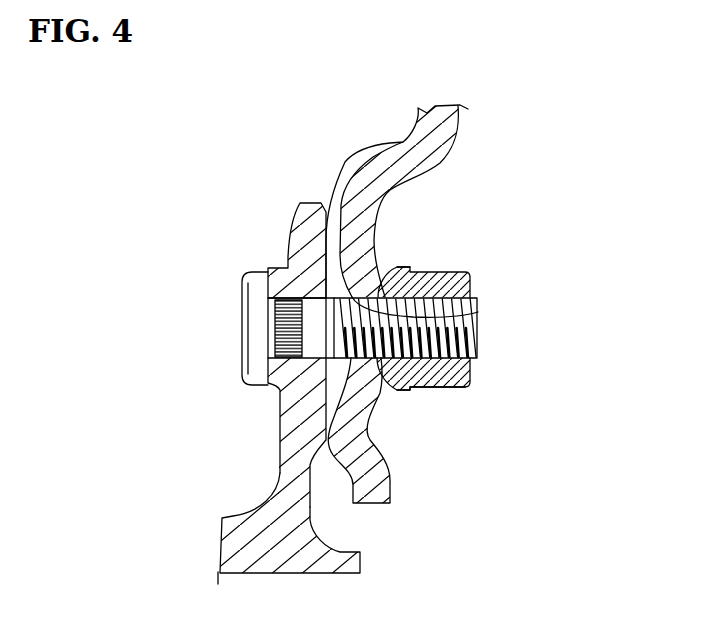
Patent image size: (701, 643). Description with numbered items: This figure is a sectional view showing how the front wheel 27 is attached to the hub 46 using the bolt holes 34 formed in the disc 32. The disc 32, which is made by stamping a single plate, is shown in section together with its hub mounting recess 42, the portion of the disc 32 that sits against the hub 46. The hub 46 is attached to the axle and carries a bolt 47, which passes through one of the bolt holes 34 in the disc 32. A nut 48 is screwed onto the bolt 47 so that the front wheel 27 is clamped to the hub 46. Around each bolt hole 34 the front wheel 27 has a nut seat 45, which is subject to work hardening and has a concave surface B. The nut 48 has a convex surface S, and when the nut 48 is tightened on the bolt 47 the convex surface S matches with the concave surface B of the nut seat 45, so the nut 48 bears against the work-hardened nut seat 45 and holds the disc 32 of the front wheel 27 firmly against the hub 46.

The front wheel 27 is at (338, 166).
The disc 32 is at (400, 477).
The bolt holes 34 is at (474, 315).
The hub mounting recess 42 is at (282, 430).
The nut seats 45 is at (437, 390).
The hub 46 is at (243, 517).
The bolt 47 is at (240, 330).
The nut 48 is at (453, 269).
The convex surface S is at (380, 268).
The concave surface B is at (423, 270).